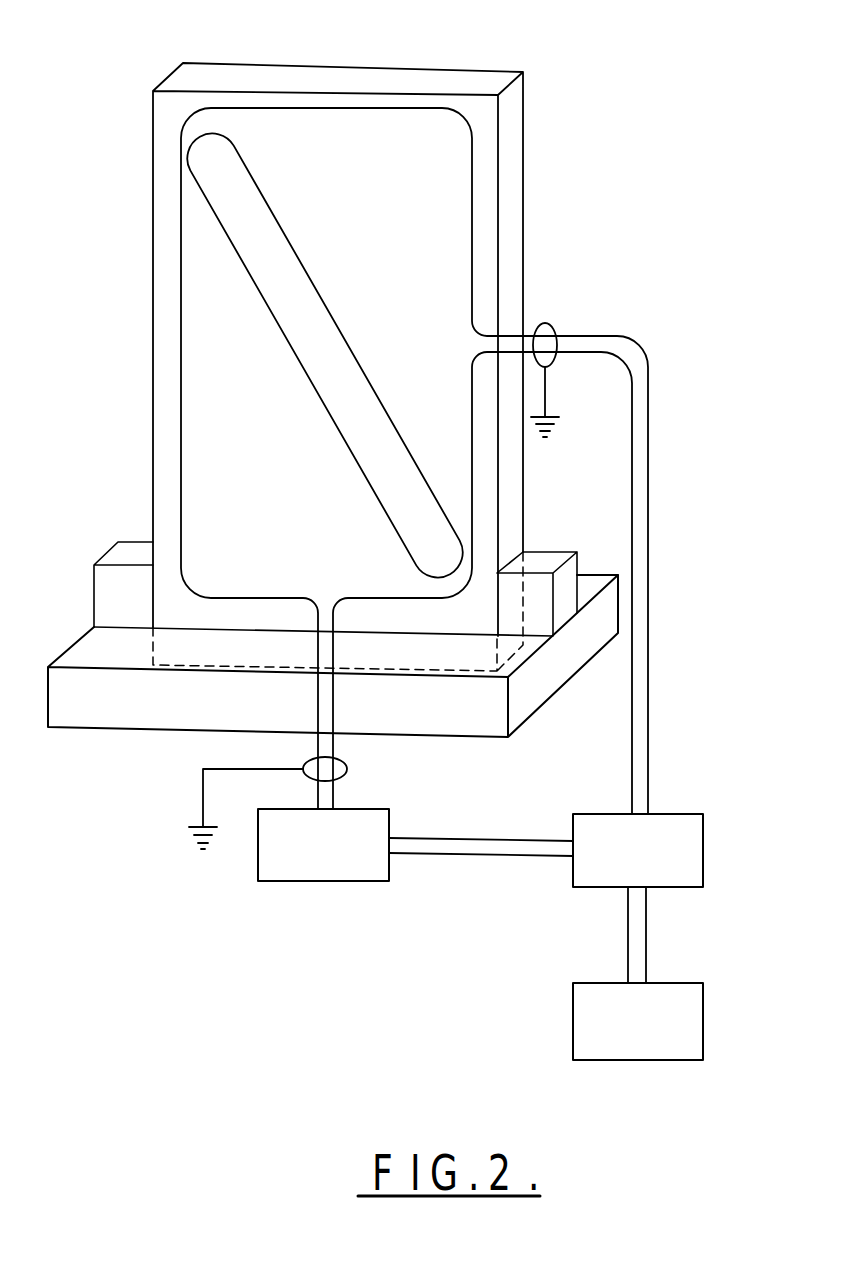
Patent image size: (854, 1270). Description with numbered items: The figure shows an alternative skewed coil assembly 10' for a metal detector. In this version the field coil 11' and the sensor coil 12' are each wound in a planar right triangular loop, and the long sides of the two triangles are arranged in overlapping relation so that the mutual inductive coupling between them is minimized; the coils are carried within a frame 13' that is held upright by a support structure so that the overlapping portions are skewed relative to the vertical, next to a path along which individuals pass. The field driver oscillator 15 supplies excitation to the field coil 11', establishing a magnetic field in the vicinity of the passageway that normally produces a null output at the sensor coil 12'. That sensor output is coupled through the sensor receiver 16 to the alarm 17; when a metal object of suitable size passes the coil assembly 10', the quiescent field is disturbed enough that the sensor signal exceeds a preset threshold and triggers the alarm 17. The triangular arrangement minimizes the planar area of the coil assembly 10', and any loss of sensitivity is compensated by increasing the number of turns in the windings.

The skewed coil assembly 10' is at (333, 399).
The field coil 11' is at (322, 356).
The sensor coil 12' is at (414, 461).
The frame 13' is at (338, 340).
The field driver oscillator 15 is at (317, 882).
The sensor receiver 16 is at (703, 838).
The alarm 17 is at (573, 1025).